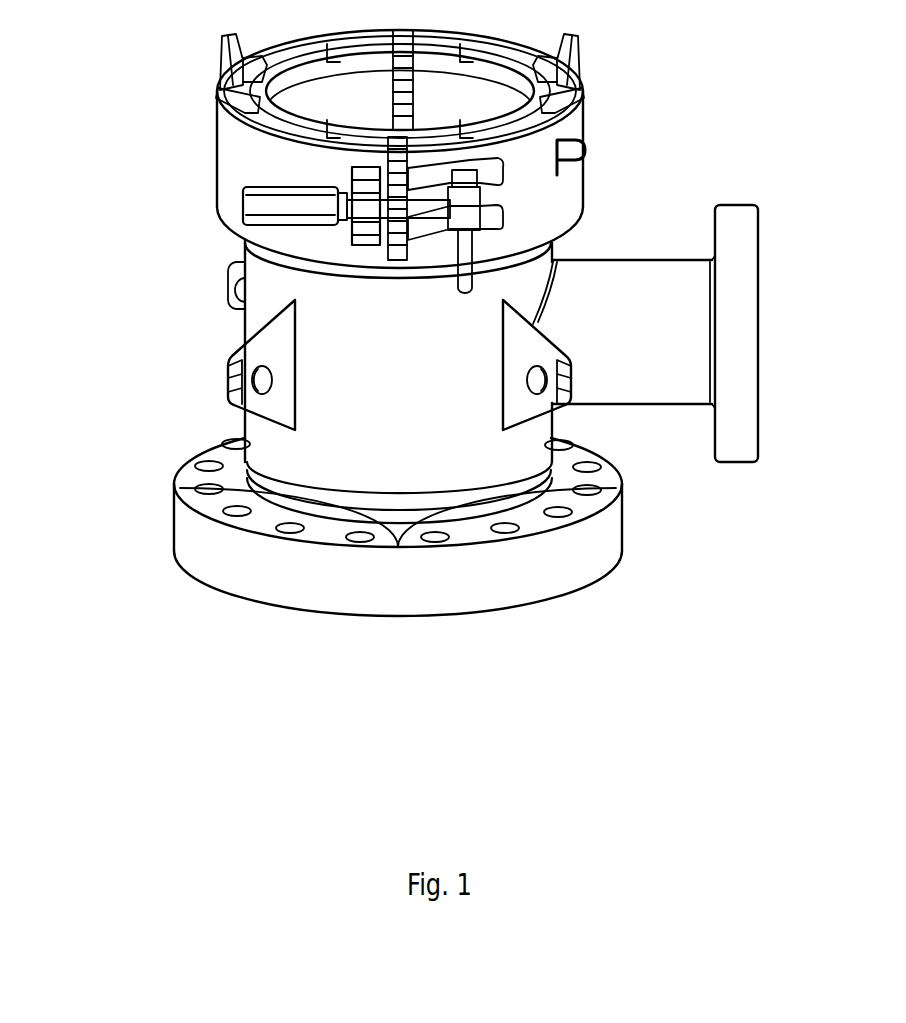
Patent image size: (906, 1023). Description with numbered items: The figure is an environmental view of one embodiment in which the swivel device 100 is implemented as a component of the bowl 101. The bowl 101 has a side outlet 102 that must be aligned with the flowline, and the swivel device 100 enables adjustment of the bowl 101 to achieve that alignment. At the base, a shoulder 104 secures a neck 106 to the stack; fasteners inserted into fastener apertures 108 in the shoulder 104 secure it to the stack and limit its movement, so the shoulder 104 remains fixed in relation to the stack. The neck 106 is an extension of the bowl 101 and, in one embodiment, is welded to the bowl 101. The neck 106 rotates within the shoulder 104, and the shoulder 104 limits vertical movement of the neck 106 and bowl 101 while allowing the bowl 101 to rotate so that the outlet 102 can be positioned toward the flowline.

The swivel device 100 is at (253, 317).
The bowl 101 is at (260, 270).
The outlet 102 is at (748, 207).
The shoulder 104 is at (622, 512).
The neck 106 is at (250, 482).
The fastener apertures 108 is at (240, 512).